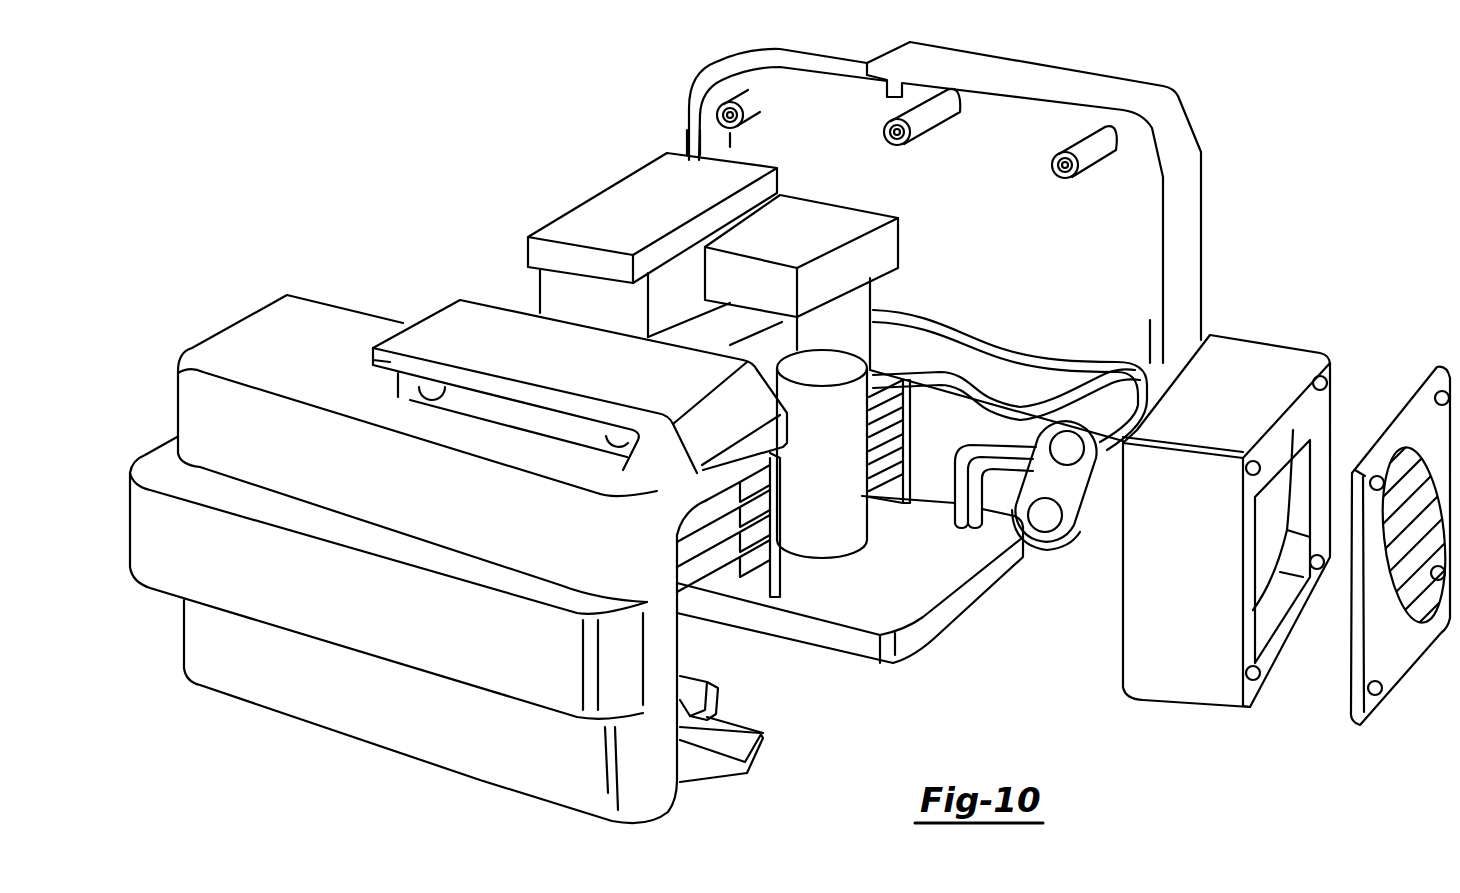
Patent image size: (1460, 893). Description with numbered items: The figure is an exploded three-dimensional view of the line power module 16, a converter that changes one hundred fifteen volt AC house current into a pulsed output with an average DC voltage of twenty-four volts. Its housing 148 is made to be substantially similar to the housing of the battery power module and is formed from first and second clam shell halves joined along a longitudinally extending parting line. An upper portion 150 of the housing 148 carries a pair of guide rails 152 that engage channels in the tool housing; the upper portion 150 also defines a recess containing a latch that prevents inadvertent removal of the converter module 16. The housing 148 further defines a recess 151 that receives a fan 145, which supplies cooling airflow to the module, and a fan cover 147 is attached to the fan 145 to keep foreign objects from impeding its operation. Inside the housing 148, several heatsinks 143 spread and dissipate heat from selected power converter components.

The line power module 16 is at (455, 158).
The heatsinks 143 is at (763, 585).
The fan 145 is at (1173, 663).
The fan cover 147 is at (1397, 658).
The housing 148 is at (525, 673).
The upper portion 150 is at (497, 315).
The recess 151 is at (740, 712).
The guide rails 152 is at (373, 360).